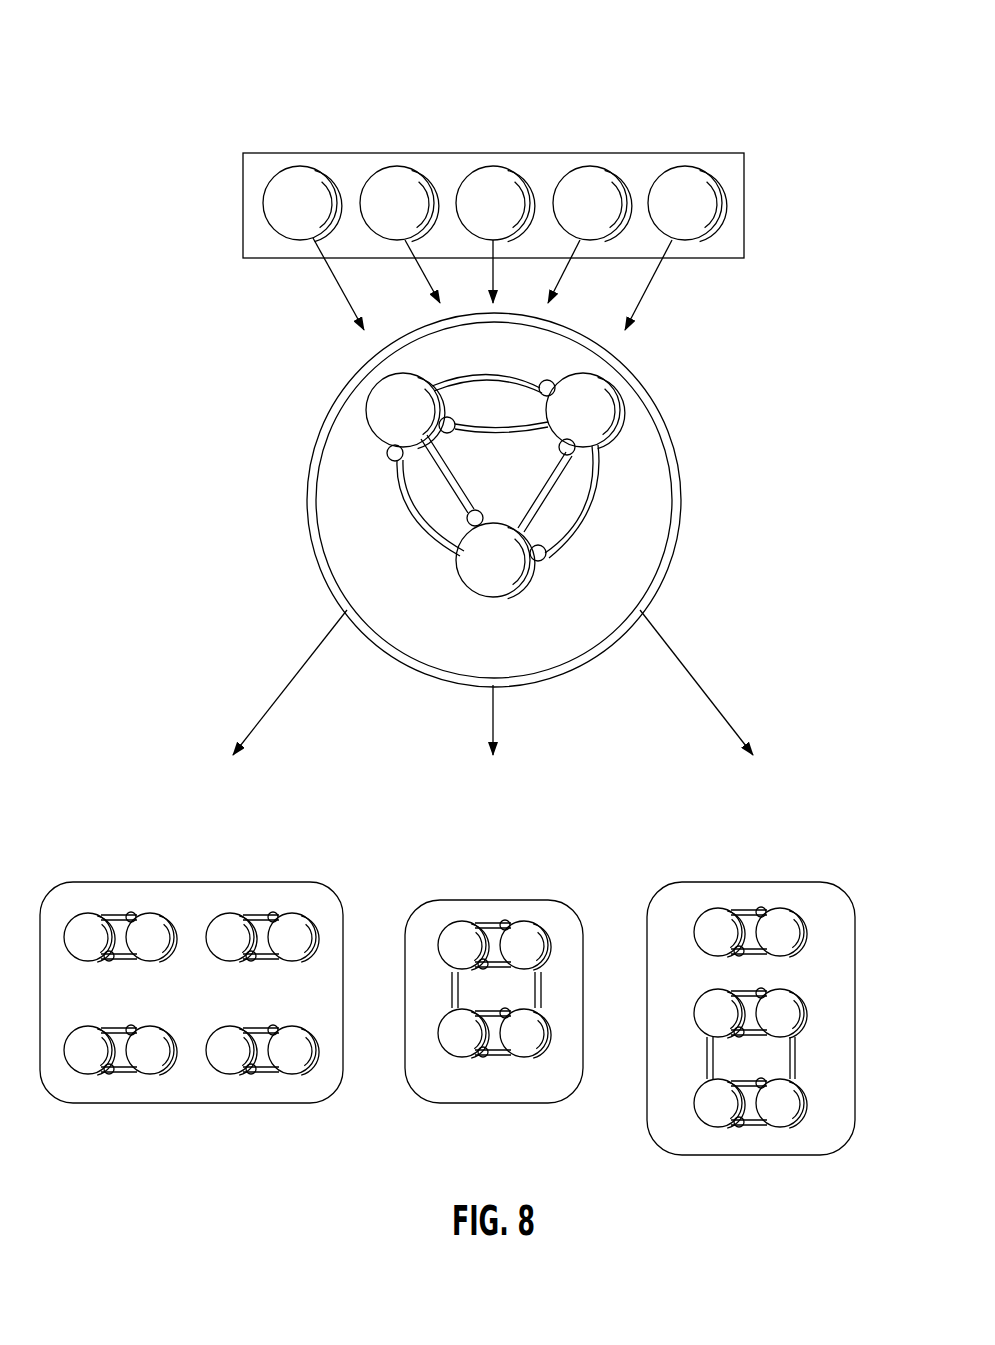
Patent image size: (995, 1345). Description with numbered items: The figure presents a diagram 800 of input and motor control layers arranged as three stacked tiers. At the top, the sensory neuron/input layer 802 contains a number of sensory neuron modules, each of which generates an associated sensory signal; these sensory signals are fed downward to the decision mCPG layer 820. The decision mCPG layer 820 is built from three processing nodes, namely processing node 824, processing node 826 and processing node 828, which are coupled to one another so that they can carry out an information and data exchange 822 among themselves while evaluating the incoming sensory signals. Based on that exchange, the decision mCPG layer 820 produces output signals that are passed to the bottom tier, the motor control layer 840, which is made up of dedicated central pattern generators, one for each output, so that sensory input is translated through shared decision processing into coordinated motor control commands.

The diagram 800 is at (150, 32).
The sensory neuron/input layer 802 is at (310, 152).
The decision mCPG layer 820 is at (650, 383).
The information and data exchange 822 is at (588, 500).
The processing node 824 is at (377, 400).
The processing node 826 is at (607, 423).
The processing node 828 is at (465, 570).
The motor control layer 840 is at (770, 818).